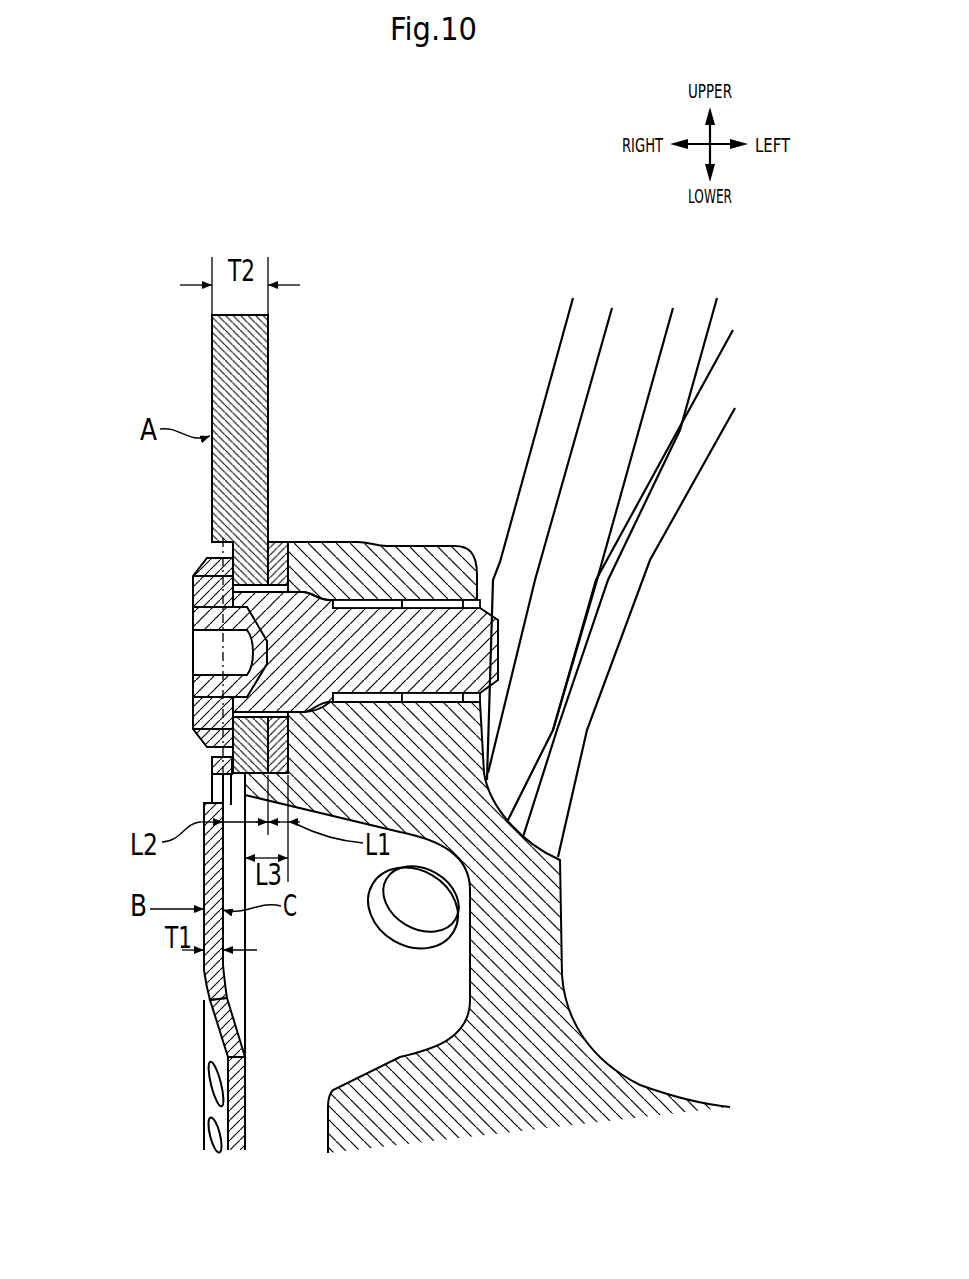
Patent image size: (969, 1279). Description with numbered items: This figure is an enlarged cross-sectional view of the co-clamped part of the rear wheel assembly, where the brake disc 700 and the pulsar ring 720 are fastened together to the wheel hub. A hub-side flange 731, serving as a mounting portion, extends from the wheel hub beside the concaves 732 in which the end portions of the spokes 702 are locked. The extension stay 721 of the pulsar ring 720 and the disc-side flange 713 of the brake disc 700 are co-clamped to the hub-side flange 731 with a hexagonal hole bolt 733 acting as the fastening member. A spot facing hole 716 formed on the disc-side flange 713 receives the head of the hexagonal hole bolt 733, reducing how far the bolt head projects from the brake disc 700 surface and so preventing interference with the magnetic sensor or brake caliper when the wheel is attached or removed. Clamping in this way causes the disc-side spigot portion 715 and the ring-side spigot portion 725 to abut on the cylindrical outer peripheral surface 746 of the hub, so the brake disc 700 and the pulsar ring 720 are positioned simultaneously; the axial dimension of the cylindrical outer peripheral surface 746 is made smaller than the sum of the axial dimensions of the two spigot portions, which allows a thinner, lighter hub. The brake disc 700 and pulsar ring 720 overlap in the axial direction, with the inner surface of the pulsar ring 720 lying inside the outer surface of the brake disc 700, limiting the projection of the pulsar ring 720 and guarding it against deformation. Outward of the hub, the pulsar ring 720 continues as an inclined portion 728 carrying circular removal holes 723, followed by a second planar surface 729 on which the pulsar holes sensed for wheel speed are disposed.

The brake disc 700 is at (188, 378).
The spokes 702 is at (560, 387).
The disc-side flange 713 is at (196, 573).
The disc-side spigot portion 715 is at (233, 777).
The spot facing hole 716 is at (223, 562).
The pulsar ring 720 is at (192, 881).
The extension stay 721 is at (280, 545).
The removal holes 723 is at (222, 1028).
The ring-side spigot portion 725 is at (290, 777).
The inclined portion 728 is at (205, 993).
The second planar surface 729 is at (278, 776).
The hub-side flange 731 is at (424, 546).
The concaves 732 is at (347, 976).
The hexagonal hole bolt 733 is at (193, 722).
The cylindrical outer peripheral surface 746 is at (258, 768).